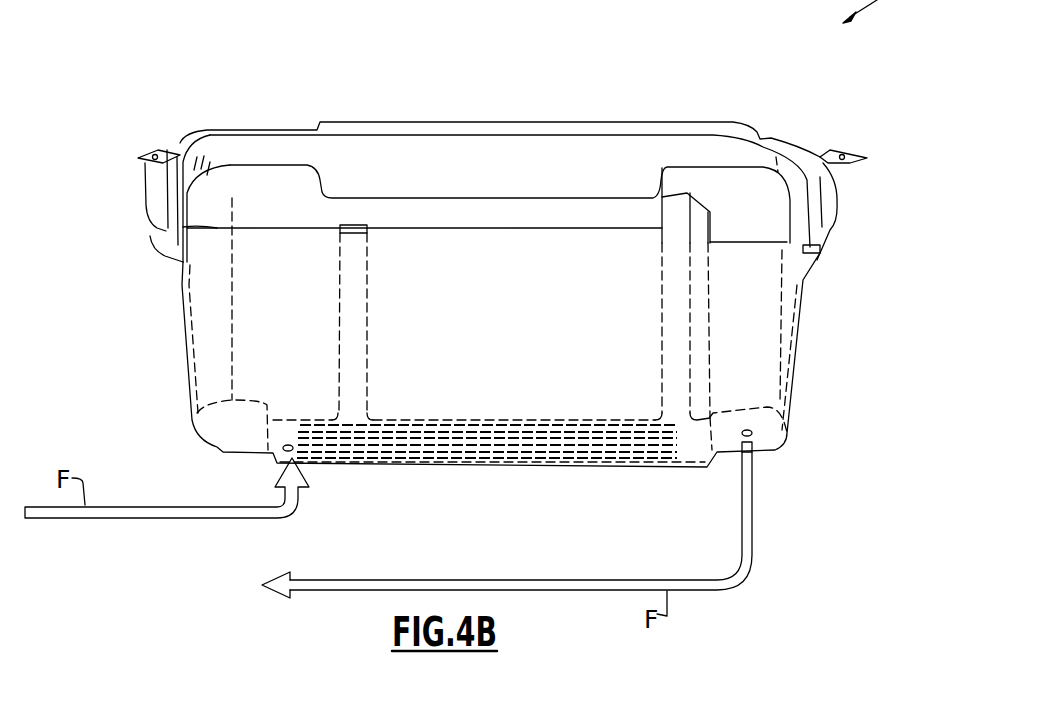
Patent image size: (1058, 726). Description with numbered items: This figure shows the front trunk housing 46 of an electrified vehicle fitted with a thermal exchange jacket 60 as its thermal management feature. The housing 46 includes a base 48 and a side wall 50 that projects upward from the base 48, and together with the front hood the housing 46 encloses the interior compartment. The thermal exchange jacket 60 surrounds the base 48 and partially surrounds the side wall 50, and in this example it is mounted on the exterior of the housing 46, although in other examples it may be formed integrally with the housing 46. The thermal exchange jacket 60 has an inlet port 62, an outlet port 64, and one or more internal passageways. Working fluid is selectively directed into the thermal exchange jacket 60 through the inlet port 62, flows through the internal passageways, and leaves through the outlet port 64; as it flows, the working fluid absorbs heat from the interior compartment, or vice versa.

The housing 46 is at (813, 110).
The base 48 is at (692, 450).
The side wall 50 is at (170, 231).
The thermal exchange jacket 60 is at (176, 351).
The inlet port 62 is at (295, 450).
The outlet port 64 is at (752, 435).